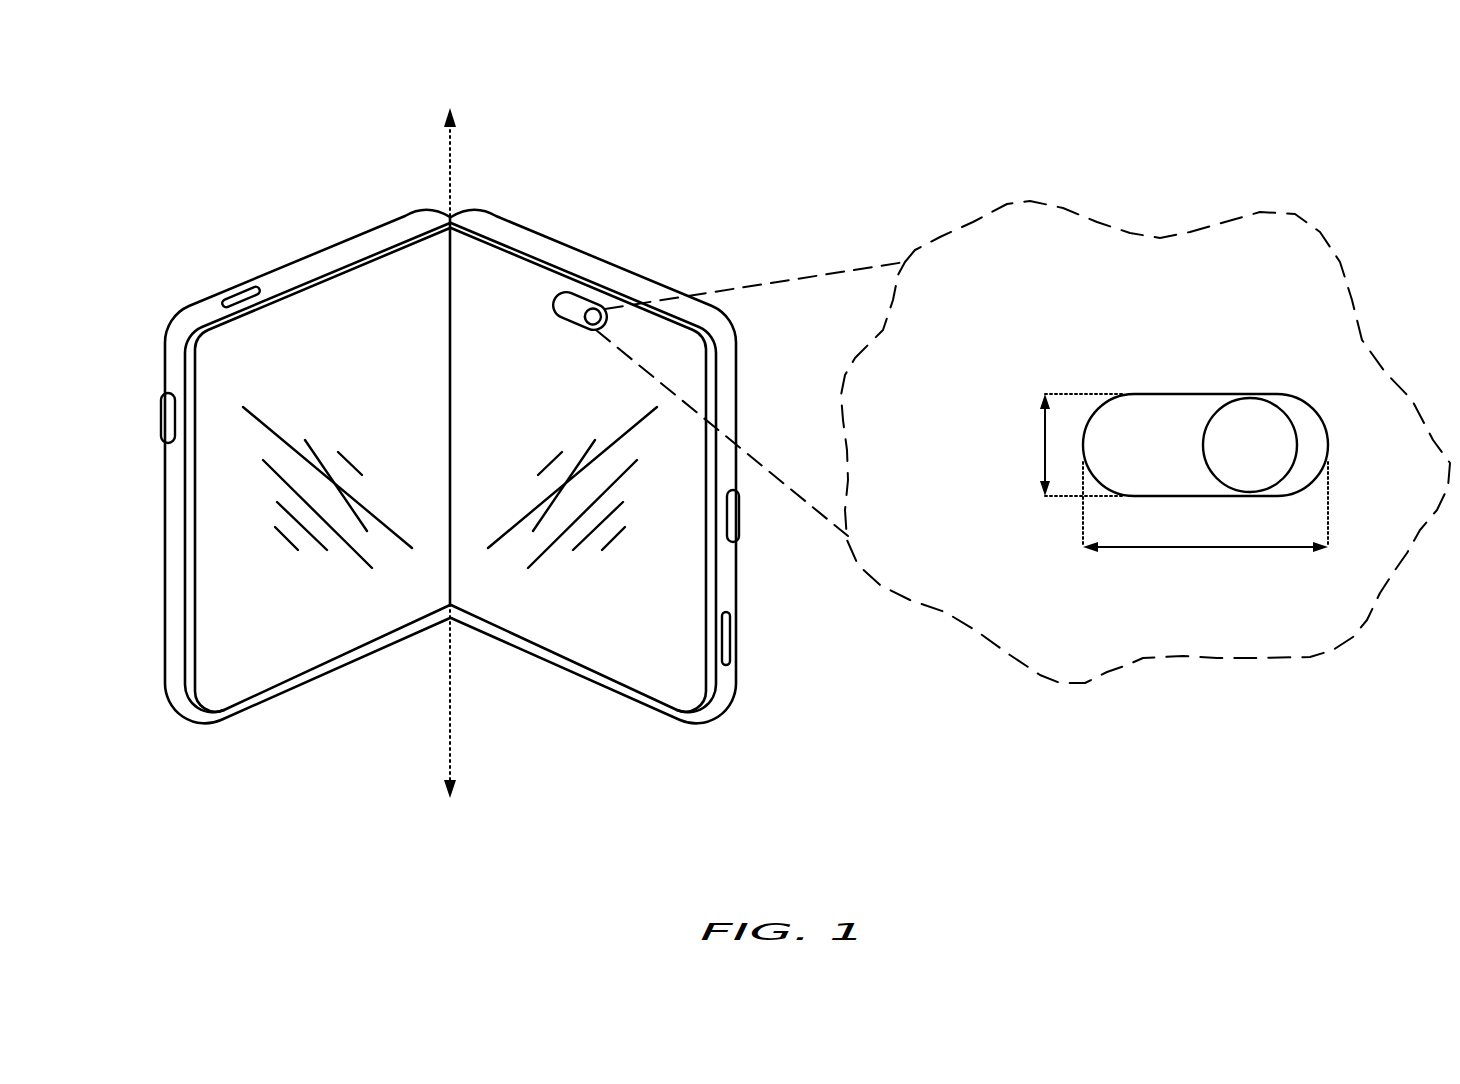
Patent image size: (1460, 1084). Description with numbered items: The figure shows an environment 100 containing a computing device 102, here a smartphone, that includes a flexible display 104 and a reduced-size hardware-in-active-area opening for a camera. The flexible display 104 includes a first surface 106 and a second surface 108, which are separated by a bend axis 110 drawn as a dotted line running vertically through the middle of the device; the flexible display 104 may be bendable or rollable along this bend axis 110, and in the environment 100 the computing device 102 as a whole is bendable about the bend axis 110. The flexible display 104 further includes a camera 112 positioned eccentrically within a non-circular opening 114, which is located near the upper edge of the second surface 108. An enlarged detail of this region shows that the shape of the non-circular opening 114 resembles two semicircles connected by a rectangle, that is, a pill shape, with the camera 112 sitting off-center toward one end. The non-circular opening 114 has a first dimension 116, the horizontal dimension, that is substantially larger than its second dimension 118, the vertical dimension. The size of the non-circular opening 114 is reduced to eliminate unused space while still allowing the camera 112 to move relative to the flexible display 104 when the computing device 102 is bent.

The environment 100 is at (766, 429).
The computing device 102 is at (548, 454).
The flexible display 104 is at (450, 481).
The first surface 106 is at (384, 296).
The second surface 108 is at (592, 365).
The bend axis 110 is at (452, 705).
The camera 112 is at (1250, 445).
The non-circular opening 114 is at (1297, 396).
The first dimension 116 is at (1205, 546).
The second dimension 118 is at (1043, 445).